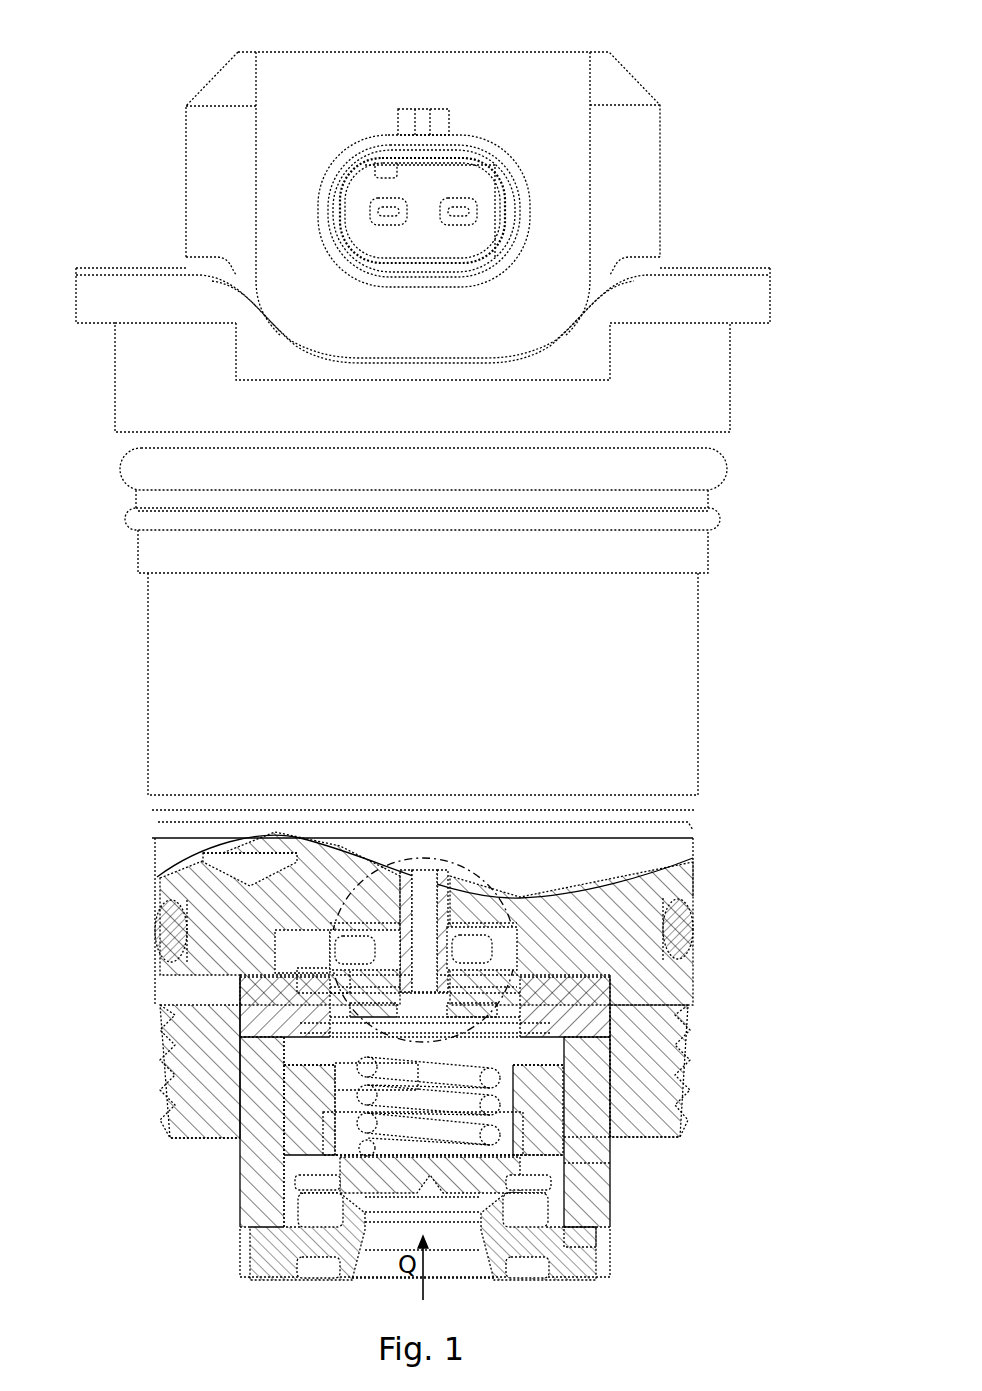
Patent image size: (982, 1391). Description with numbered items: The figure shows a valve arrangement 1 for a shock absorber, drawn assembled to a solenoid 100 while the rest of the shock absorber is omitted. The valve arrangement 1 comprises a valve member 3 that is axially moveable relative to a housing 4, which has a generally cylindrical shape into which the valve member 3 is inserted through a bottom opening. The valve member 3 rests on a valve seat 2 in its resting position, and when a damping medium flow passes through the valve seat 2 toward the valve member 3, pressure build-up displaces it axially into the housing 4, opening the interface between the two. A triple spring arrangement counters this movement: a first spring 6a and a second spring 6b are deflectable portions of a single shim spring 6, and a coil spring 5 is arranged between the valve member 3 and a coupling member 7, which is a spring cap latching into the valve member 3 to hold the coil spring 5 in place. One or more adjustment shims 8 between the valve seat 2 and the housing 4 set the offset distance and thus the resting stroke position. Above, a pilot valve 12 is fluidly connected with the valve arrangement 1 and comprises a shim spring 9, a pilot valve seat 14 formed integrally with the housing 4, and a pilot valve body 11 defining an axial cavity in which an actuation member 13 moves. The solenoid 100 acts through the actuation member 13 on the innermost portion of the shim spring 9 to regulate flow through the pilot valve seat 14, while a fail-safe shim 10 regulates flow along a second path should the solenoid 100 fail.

The solenoid 100 is at (423, 475).
The valve arrangement 1 is at (714, 1214).
The valve seat 2 is at (240, 1255).
The valve member 3 is at (283, 1083).
The housing 4 is at (240, 1152).
The coil spring 5 is at (357, 1118).
The shim spring 6 is at (563, 1037).
The first spring 6a is at (373, 1010).
The second spring 6b is at (472, 1010).
The coupling member 7 is at (513, 1060).
The adjustment shim 8 is at (597, 1227).
The shim spring 9 is at (300, 976).
The fail-safe shim 10 is at (265, 972).
The pilot valve body 11 is at (323, 920).
The pilot valve 12 is at (430, 858).
The actuation member 13 is at (450, 918).
The pilot valve seat 14 is at (457, 1002).